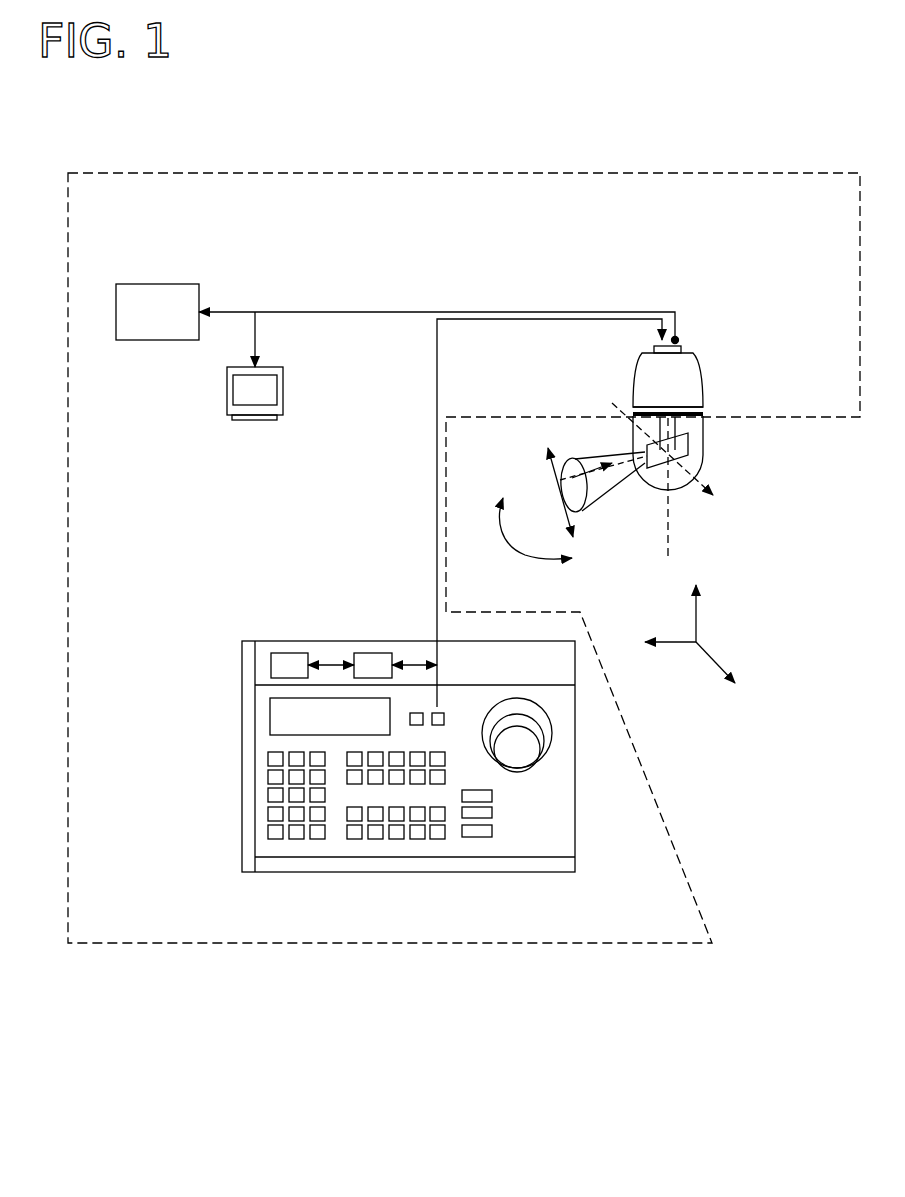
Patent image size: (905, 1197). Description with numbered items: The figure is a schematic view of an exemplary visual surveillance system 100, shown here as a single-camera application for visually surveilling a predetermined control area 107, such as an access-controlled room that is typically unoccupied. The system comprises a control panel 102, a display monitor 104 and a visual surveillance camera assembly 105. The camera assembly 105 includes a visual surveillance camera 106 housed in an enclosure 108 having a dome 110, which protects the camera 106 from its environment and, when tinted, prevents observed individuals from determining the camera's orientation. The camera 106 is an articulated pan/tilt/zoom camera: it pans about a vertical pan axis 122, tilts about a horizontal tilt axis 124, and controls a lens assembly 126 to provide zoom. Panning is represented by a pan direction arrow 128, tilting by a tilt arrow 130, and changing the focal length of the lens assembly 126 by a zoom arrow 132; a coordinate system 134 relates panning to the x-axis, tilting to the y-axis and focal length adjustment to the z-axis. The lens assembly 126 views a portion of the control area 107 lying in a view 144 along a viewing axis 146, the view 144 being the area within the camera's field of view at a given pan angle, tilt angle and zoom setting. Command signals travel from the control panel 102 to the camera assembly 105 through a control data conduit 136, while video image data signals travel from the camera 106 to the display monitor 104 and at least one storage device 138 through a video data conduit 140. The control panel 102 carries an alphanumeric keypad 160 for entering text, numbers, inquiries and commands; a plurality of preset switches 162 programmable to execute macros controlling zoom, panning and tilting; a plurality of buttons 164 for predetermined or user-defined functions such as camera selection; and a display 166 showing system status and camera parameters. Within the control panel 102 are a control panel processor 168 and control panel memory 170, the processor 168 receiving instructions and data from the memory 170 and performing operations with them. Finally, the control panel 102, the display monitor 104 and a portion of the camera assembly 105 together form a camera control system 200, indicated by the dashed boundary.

The visual surveillance system 100 is at (400, 268).
The control panel 102 is at (575, 760).
The display monitor 104 is at (227, 388).
The visual surveillance camera assembly 105 is at (697, 325).
The visual surveillance camera 106 is at (688, 445).
The control area 107 is at (531, 604).
The enclosure 108 is at (688, 375).
The dome 110 is at (680, 488).
The vertical pan axis 122 is at (668, 540).
The horizontal tilt axis 124 is at (713, 495).
The lens assembly 126 is at (626, 462).
The pan direction arrow 128 is at (505, 517).
The tilt arrow 130 is at (560, 478).
The zoom arrow 132 is at (590, 462).
The coordinate system 134 is at (698, 612).
The control data conduit 136 is at (578, 320).
The storage device 138 is at (168, 284).
The video data conduit 140 is at (508, 312).
The view 144 is at (584, 512).
The viewing axis 146 is at (613, 476).
The alphanumeric keypad 160 is at (236, 743).
The preset switches 162 is at (449, 747).
The buttons 164 is at (448, 841).
The display 166 is at (292, 716).
The control panel processor 168 is at (373, 652).
The control panel memory 170 is at (294, 652).
The camera control system 200 is at (627, 943).